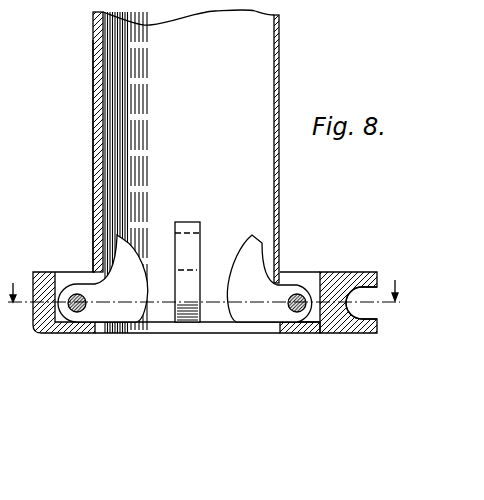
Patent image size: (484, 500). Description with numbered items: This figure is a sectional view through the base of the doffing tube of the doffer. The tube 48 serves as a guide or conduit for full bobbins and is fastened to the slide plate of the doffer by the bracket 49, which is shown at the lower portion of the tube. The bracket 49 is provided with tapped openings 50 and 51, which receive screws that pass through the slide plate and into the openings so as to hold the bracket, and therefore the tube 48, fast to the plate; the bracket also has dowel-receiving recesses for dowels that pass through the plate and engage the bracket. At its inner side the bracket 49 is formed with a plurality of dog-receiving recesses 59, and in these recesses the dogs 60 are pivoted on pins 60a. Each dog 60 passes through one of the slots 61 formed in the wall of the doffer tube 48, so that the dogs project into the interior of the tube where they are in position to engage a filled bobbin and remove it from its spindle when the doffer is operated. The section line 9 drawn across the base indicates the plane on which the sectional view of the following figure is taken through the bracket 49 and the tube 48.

The tube 48 is at (282, 100).
The tapped opening 51 is at (93, 228).
The dog-receiving recess 59 is at (70, 258).
The bracket 49 is at (340, 275).
The tapped opening 50 is at (373, 283).
The slot 61 is at (185, 278).
The dog 60 is at (192, 317).
The pivot pin 60a is at (77, 312).
The section line 9 is at (211, 294).